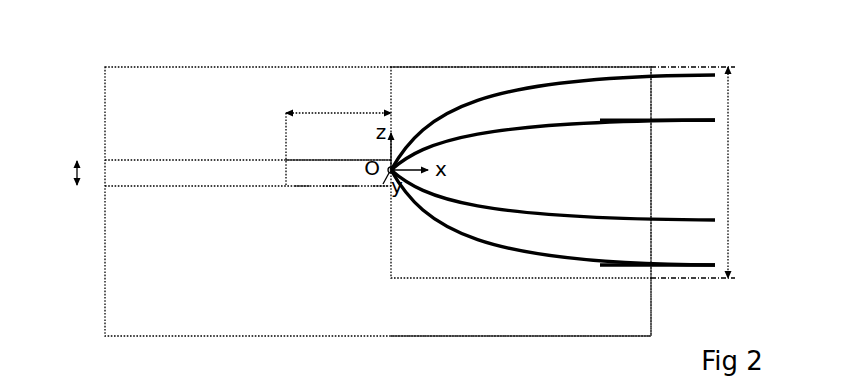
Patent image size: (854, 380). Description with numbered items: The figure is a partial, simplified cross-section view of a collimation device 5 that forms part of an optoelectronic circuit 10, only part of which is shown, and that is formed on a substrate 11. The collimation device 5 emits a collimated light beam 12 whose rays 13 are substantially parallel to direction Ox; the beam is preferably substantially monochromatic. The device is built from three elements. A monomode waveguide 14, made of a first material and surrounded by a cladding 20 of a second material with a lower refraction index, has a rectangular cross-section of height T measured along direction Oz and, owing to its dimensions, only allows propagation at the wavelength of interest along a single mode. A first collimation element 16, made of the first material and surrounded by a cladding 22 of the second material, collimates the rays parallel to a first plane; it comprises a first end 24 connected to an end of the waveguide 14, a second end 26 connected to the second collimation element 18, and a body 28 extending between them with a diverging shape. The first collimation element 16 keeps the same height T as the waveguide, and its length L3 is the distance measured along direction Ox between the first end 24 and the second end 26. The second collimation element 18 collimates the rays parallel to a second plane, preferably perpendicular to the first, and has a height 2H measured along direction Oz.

The collimation device 5 is at (610, 62).
The optoelectronic circuit 10 is at (685, 62).
The substrate 11 is at (630, 308).
The collimated light beam 12 is at (667, 204).
The rays 13 is at (675, 124).
The monomode waveguide 14 is at (155, 176).
The first collimation element 16 is at (318, 157).
The second collimation element 18 is at (465, 268).
The cladding 20 is at (140, 199).
The cladding 22 is at (331, 183).
The first end 24 is at (301, 183).
The second end 26 is at (381, 186).
The body 28 is at (350, 183).
The length of first collimation element L3 is at (356, 113).
The height T is at (63, 174).
The height of second collimation element 2H is at (745, 172).